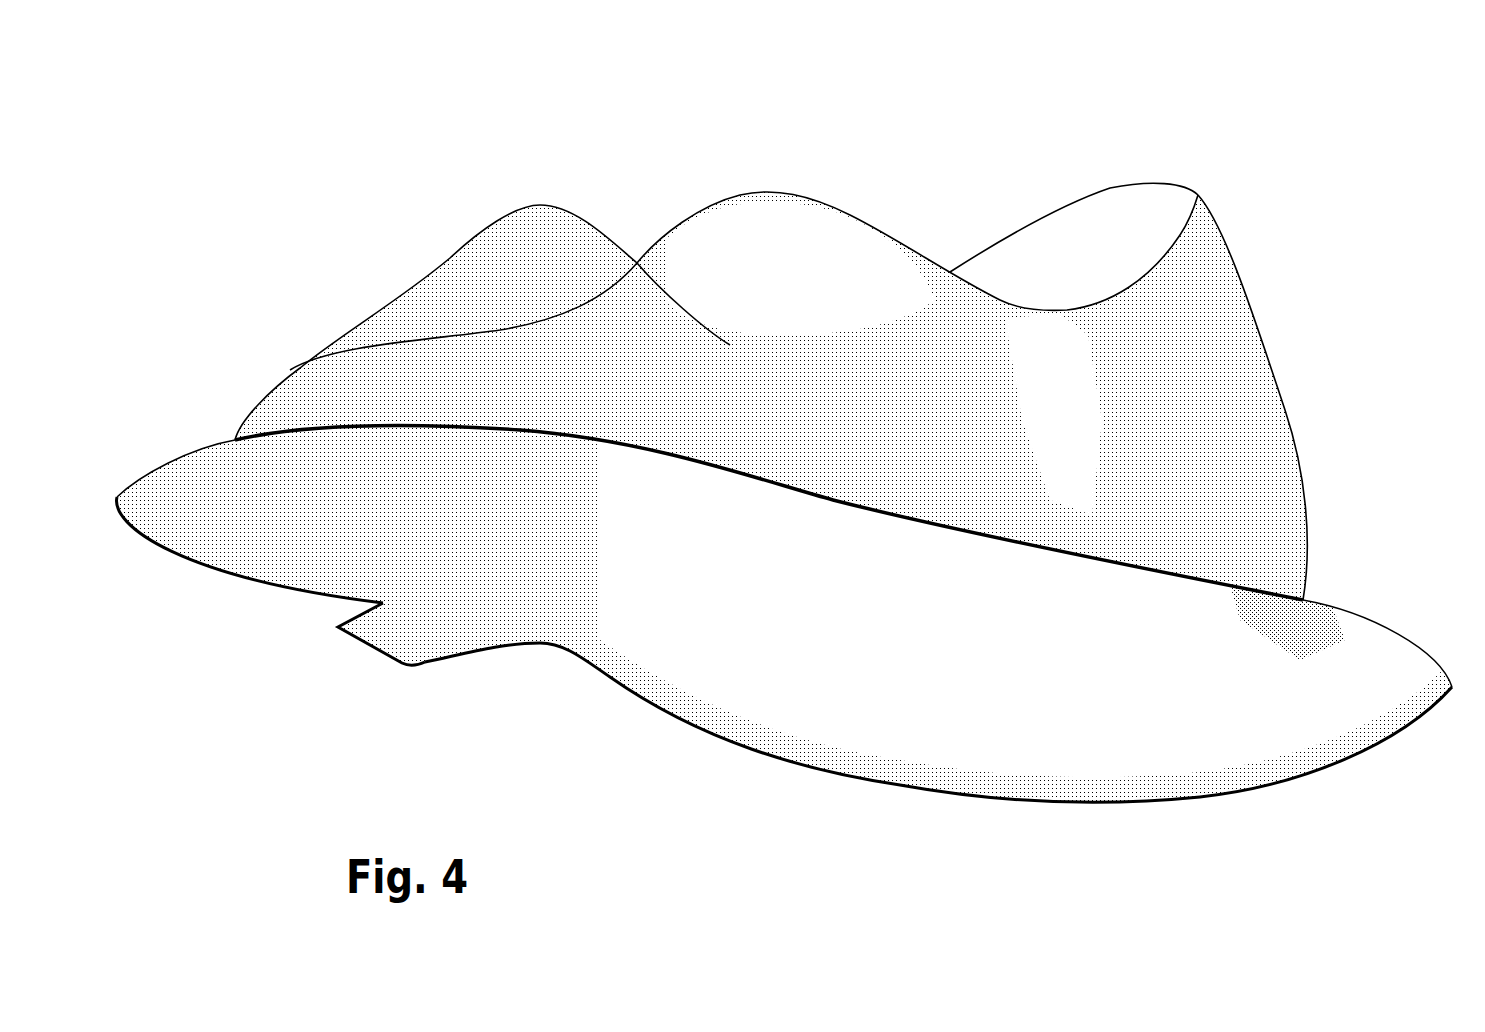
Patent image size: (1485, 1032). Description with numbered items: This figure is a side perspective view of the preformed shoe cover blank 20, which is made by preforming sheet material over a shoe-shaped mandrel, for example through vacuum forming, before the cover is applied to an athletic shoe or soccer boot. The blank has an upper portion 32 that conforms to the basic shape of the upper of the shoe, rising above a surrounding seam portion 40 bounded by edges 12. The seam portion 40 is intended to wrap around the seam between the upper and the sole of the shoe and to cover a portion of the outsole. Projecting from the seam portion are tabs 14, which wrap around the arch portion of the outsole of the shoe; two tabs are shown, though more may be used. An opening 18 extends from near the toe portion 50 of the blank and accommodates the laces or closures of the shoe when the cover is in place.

The edges 12 is at (867, 773).
The tabs 14 is at (410, 640).
The opening 18 is at (637, 238).
The preformed shoe cover blank 20 is at (1045, 155).
The upper portion 32 is at (1207, 357).
The seam portion 40 is at (1402, 676).
The toe portion 50 is at (277, 373).